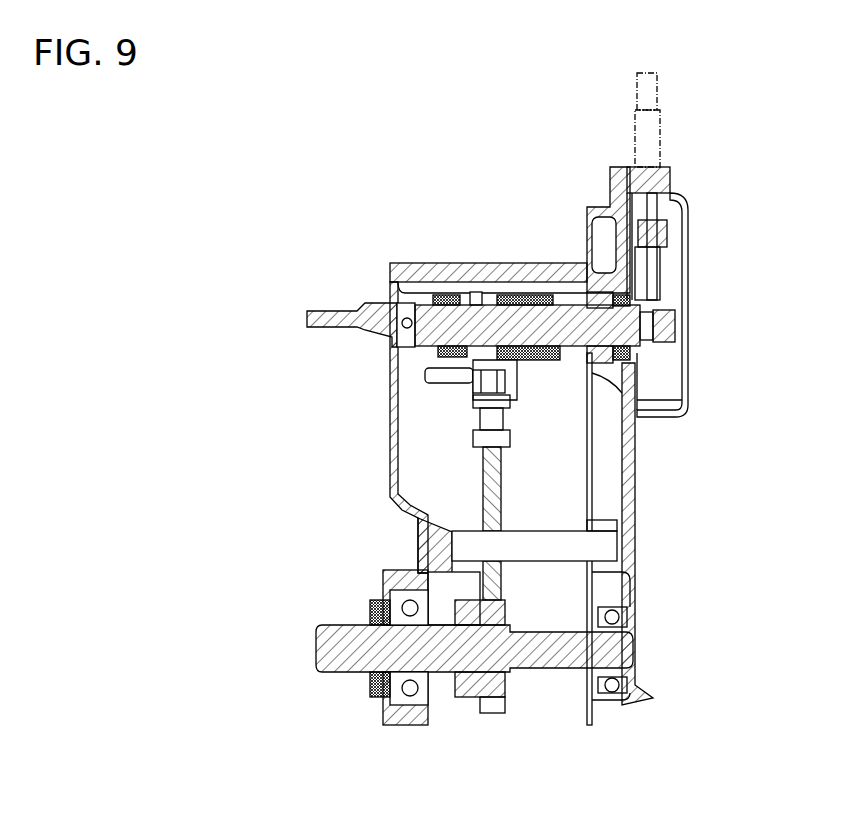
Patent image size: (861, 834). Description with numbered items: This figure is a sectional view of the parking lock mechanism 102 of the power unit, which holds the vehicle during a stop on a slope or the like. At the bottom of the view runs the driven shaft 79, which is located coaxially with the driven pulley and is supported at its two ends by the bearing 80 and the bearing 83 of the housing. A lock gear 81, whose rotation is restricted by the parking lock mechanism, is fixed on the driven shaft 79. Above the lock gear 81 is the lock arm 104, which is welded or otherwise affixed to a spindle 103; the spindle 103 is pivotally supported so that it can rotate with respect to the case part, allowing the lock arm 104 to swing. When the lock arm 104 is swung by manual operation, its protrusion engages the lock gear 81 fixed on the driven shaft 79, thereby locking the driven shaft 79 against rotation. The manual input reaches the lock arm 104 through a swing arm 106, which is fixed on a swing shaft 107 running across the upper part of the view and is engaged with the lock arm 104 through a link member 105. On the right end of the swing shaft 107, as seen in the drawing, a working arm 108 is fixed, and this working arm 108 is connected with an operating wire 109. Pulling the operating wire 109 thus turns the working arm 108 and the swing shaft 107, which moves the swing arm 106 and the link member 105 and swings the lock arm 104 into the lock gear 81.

The parking lock mechanism 102 is at (486, 184).
The swing shaft 107 is at (530, 325).
The working arm 108 is at (660, 262).
The operating wire 109 is at (657, 212).
The swing arm 106 is at (485, 383).
The link member 105 is at (478, 418).
The lock arm 104 is at (500, 482).
The spindle 103 is at (553, 542).
The driven shaft 79 is at (345, 636).
The bearing 80 is at (410, 690).
The lock gear 81 is at (490, 705).
The bearing 83 is at (605, 692).